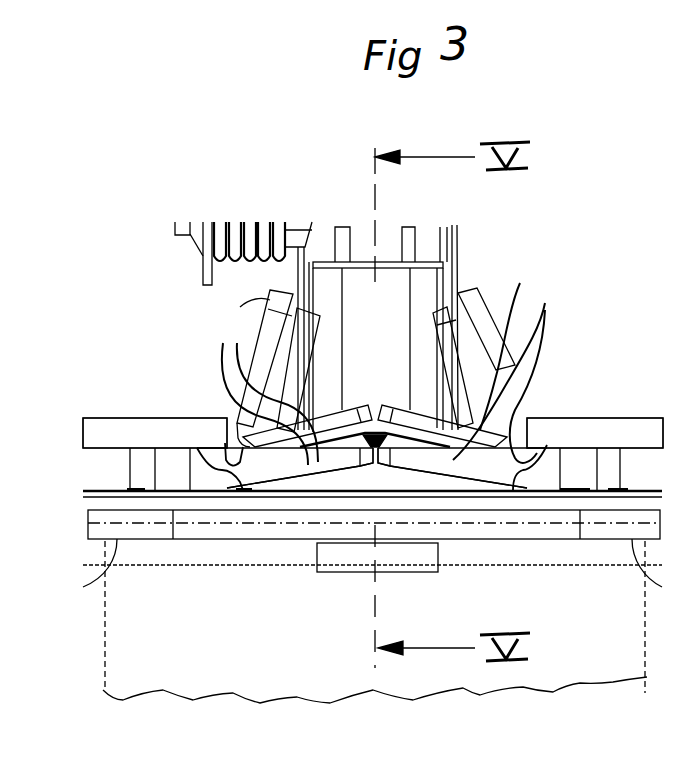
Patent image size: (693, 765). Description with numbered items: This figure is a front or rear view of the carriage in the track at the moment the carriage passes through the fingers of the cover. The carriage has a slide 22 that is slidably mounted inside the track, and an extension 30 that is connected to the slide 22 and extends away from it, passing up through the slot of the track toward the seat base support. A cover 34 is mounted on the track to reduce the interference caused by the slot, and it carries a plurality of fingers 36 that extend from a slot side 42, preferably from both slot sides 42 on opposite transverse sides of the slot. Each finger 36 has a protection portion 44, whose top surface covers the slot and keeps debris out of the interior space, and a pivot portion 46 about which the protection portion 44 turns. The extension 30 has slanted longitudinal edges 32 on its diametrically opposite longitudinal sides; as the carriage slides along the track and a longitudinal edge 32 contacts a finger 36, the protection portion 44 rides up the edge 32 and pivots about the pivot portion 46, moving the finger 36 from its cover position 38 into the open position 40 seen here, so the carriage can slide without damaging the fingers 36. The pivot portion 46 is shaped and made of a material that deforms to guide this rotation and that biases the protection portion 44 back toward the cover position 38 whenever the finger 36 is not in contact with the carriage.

The slide 22 is at (250, 645).
The extension 30 is at (393, 212).
The longitudinal edges 32 is at (383, 345).
The cover 34 is at (118, 403).
The fingers 36 is at (292, 353).
The cover position 38 is at (356, 492).
The open position 40 is at (263, 285).
The slot side 42 is at (152, 447).
The protection portion 44 is at (292, 371).
The pivot portion 46 is at (223, 457).